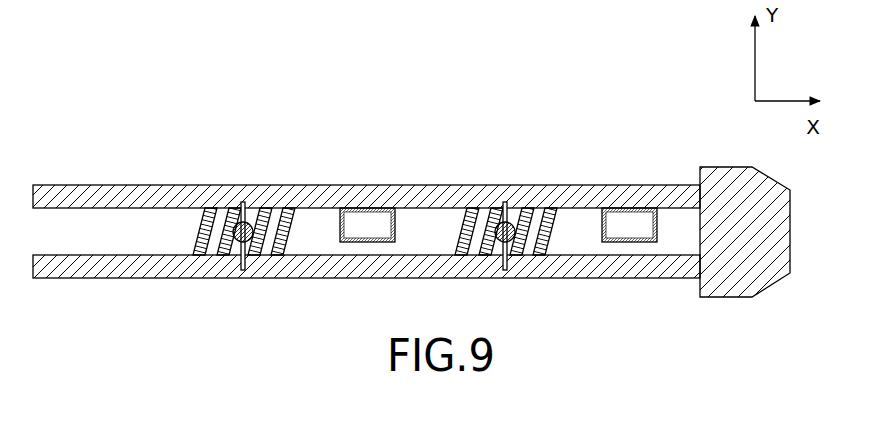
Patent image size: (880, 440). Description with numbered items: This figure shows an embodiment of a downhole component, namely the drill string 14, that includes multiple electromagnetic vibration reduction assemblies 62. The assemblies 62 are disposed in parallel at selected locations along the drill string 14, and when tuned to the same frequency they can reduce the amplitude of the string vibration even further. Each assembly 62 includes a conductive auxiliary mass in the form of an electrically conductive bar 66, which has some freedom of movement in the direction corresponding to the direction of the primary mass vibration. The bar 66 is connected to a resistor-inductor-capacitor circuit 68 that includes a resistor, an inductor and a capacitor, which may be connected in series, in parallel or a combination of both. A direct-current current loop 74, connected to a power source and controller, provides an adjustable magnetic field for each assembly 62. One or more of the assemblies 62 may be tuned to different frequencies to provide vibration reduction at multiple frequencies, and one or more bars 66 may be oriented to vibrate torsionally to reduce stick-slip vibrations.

The drill string 14 is at (97, 185).
The electromagnetic vibration reduction assembly 62 is at (275, 166).
The electrically conductive bar 66 is at (263, 249).
The RCL circuit 68 is at (366, 209).
The DC current loop 74 is at (204, 228).